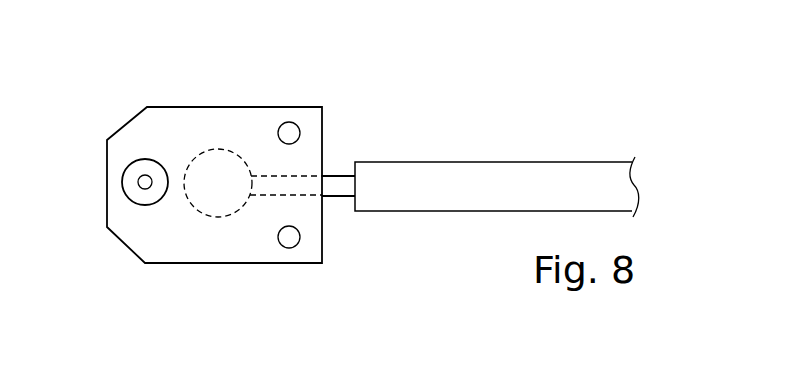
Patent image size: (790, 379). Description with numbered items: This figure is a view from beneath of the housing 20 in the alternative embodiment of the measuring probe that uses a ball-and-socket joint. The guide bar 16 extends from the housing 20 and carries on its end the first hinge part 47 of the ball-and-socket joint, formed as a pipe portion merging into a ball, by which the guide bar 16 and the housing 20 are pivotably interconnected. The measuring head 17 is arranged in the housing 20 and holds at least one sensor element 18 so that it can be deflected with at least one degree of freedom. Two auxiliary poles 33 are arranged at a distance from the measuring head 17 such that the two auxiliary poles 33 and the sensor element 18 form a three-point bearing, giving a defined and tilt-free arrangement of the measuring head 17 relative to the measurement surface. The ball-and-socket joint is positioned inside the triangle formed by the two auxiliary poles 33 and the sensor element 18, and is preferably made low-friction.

The guide bar 16 is at (576, 150).
The measuring head 17 is at (145, 150).
The sensor element 18 is at (145, 183).
The housing 20 is at (246, 98).
The auxiliary poles 33 is at (289, 133).
The first hinge part 47 is at (335, 184).